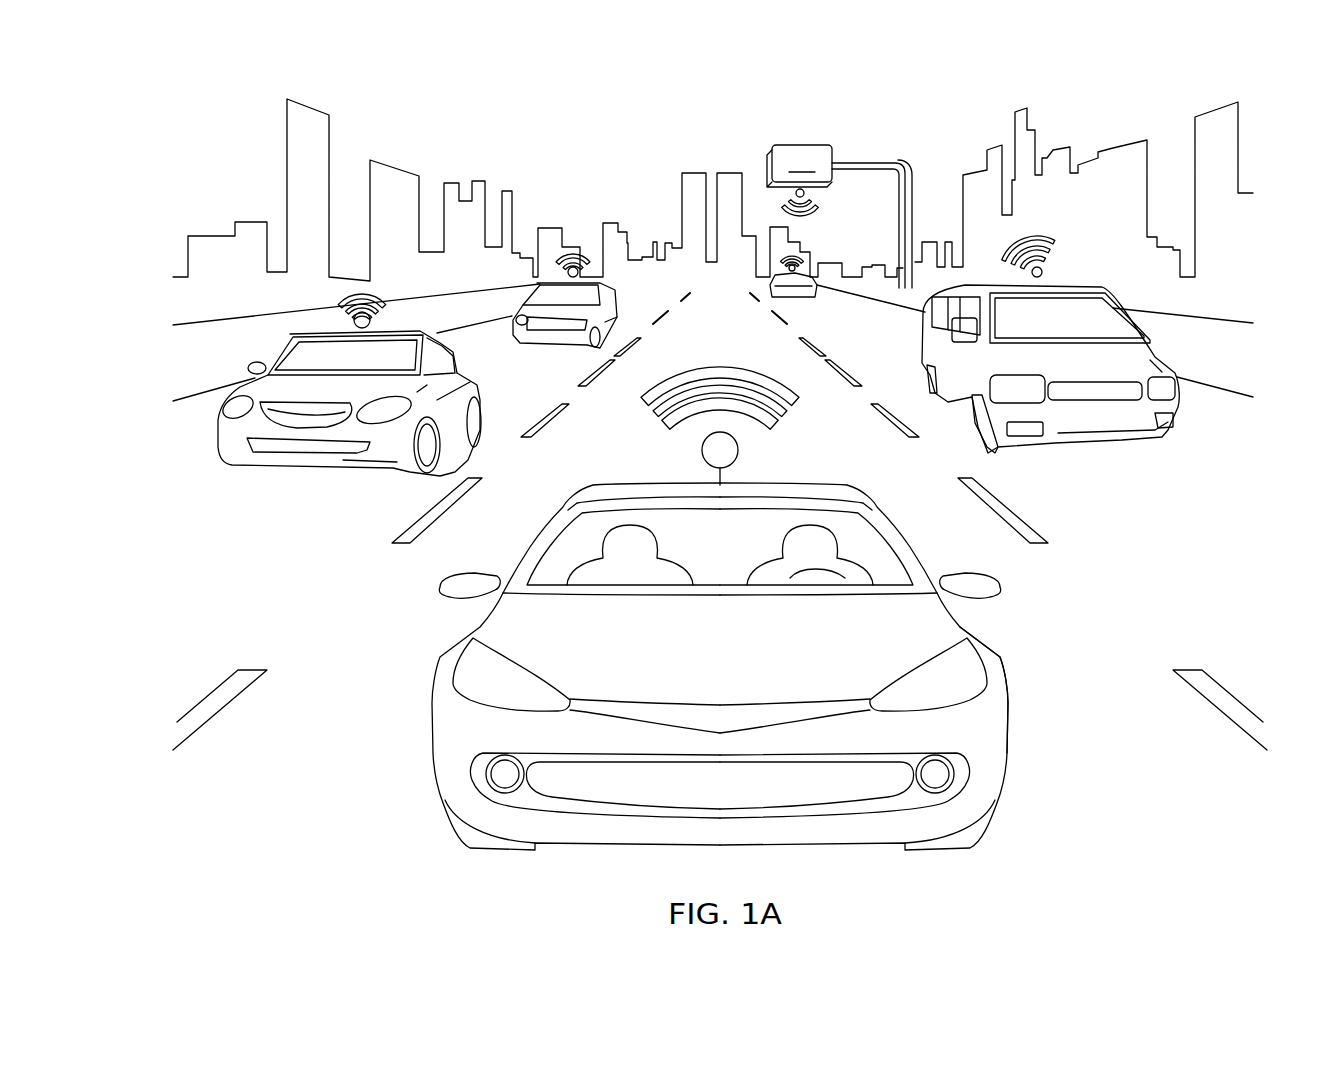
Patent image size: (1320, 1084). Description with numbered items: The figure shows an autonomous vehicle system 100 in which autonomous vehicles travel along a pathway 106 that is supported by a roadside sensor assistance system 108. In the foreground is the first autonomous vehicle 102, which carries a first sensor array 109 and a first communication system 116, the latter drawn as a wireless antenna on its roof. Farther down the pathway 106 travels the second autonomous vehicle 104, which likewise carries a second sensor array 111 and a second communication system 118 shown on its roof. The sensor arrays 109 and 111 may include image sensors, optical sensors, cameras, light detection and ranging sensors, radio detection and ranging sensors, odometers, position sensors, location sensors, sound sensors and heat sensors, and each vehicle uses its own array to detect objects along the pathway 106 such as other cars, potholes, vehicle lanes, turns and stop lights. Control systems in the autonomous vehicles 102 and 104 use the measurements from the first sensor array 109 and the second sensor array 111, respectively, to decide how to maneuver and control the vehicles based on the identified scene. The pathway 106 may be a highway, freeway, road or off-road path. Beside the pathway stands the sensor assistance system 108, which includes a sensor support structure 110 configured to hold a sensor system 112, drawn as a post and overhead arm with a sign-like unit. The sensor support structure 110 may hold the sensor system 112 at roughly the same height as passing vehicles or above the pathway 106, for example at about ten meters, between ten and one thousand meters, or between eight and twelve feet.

The autonomous vehicle system 100 is at (233, 168).
The autonomous vehicle 102 is at (747, 608).
The second autonomous vehicle 104 is at (1083, 321).
The pathway 106 is at (717, 297).
The sensor assistance system 108 is at (937, 168).
The first sensor array 109 is at (977, 720).
The sensor support structure 110 is at (906, 190).
The second sensor array 111 is at (1156, 364).
The sensor system 112 is at (799, 180).
The first communication system 116 is at (718, 475).
The second communication system 118 is at (1034, 281).